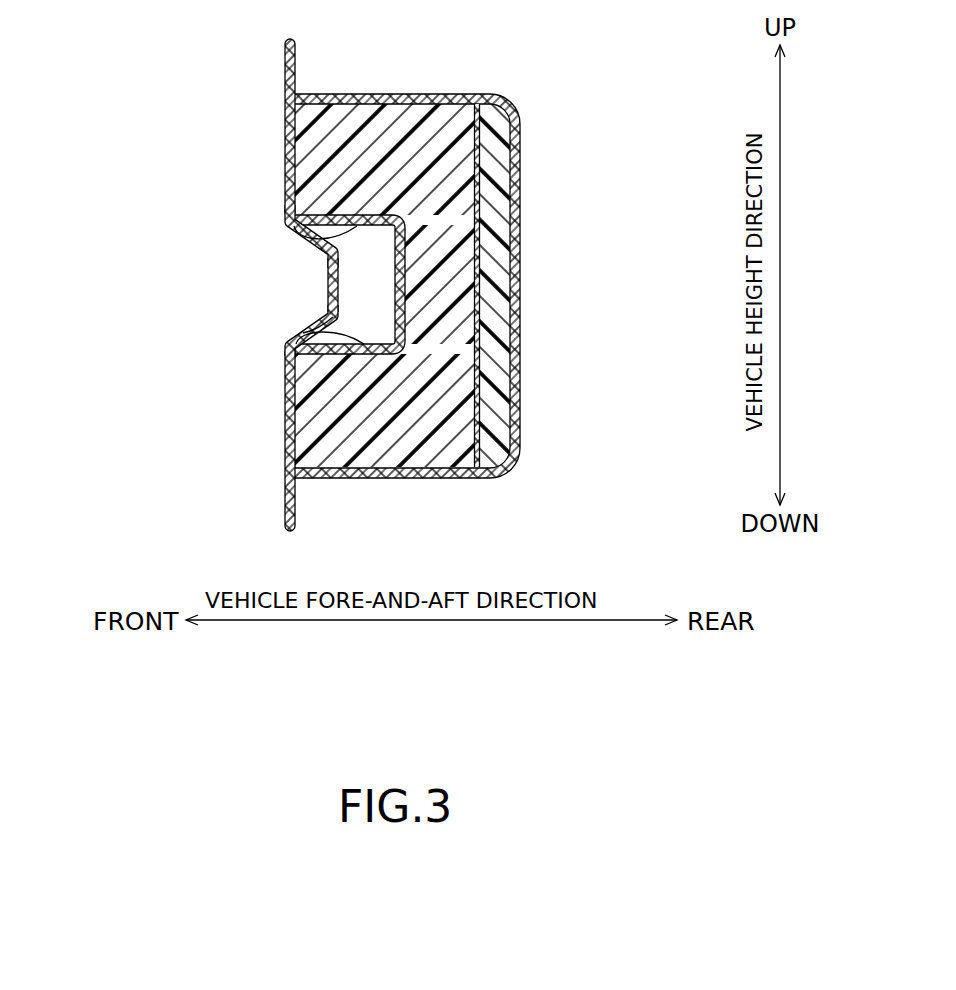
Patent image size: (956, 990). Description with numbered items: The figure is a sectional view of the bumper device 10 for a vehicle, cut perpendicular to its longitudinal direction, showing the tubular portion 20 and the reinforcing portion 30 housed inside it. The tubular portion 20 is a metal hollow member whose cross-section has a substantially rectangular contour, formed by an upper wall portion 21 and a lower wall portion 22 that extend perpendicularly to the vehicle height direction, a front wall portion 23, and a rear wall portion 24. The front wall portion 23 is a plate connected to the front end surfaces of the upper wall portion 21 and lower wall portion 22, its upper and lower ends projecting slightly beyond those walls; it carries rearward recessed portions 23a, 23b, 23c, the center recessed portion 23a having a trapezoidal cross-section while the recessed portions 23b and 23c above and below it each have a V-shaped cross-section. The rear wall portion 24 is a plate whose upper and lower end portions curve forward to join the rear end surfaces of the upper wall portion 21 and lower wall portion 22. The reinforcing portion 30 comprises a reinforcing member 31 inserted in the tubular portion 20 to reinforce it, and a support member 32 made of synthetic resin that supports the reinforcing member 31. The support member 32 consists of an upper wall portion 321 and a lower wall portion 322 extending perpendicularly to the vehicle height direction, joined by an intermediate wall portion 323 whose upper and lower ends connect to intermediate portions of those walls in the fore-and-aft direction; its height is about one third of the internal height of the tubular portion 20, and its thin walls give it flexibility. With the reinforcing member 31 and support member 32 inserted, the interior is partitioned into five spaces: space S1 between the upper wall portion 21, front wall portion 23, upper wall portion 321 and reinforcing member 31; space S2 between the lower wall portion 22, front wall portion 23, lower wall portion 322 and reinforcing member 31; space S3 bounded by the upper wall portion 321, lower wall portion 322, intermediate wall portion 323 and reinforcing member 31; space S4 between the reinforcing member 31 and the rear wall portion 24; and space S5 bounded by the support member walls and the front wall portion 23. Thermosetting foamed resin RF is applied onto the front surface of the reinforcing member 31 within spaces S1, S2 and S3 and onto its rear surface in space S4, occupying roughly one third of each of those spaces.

The bumper device for a vehicle 10 is at (92, 119).
The tubular portion 20 is at (504, 99).
The upper wall portion 21 is at (383, 93).
The lower wall portion 22 is at (393, 478).
The front wall portion 23 is at (285, 123).
The recessed portion 23a is at (328, 288).
The recessed portion 23b is at (297, 178).
The recessed portion 23c is at (291, 394).
The rear wall portion 24 is at (520, 253).
The reinforcing portion 30 is at (447, 95).
The reinforcing member 31 is at (520, 138).
The support member 32 is at (393, 245).
The upper wall portion 321 is at (291, 230).
The lower wall portion 322 is at (317, 338).
The intermediate wall portion 323 is at (337, 329).
The space S1 is at (330, 112).
The space S2 is at (343, 452).
The space S3 is at (420, 280).
The space S4 is at (497, 197).
The space S5 is at (365, 262).
The thermosetting foamed resin RF is at (420, 113).